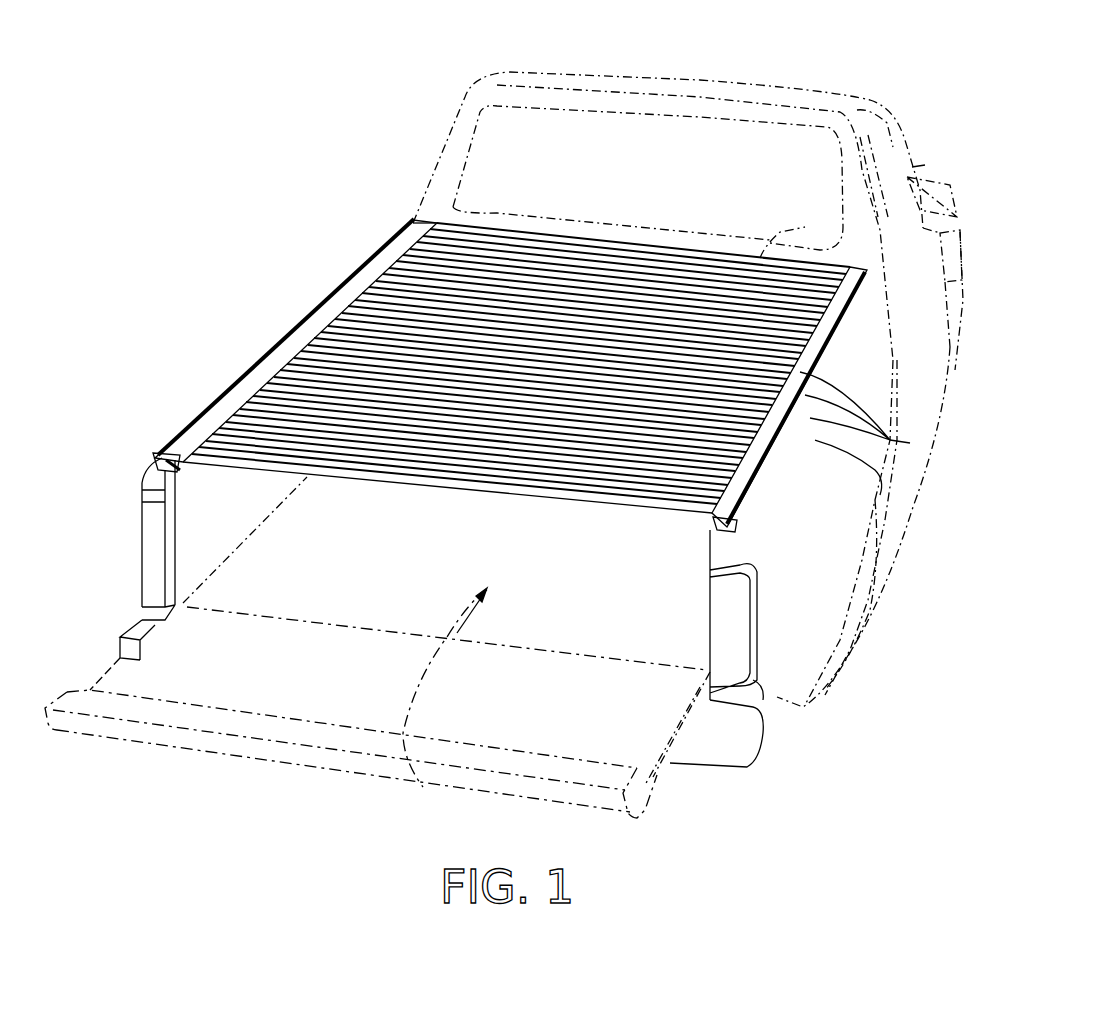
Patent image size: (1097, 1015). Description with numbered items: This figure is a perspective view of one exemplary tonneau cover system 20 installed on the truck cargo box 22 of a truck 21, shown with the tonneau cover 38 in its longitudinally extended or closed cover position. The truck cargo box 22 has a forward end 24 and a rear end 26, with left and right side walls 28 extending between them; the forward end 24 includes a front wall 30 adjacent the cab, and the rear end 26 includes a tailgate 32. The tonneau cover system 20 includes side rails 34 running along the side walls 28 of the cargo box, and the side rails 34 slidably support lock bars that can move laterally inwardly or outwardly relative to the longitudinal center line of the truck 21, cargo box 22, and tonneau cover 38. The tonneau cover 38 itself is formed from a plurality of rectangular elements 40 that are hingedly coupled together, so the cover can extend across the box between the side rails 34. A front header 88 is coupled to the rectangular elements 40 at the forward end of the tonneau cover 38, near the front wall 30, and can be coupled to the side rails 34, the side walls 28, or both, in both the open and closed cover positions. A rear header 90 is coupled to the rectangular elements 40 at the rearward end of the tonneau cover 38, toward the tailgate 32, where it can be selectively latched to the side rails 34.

The tonneau cover system 20 is at (283, 230).
The truck 21 is at (713, 82).
The truck cargo box 22 is at (417, 787).
The forward end 24 is at (448, 218).
The rear end 26 is at (160, 583).
The side walls 28 is at (133, 487).
The front wall 30 is at (933, 164).
The tailgate 32 is at (657, 777).
The side rails 34 is at (200, 423).
The tonneau cover 38 is at (597, 297).
The rectangular elements 40 is at (870, 433).
The front header 88 is at (797, 236).
The rear header 90 is at (462, 485).